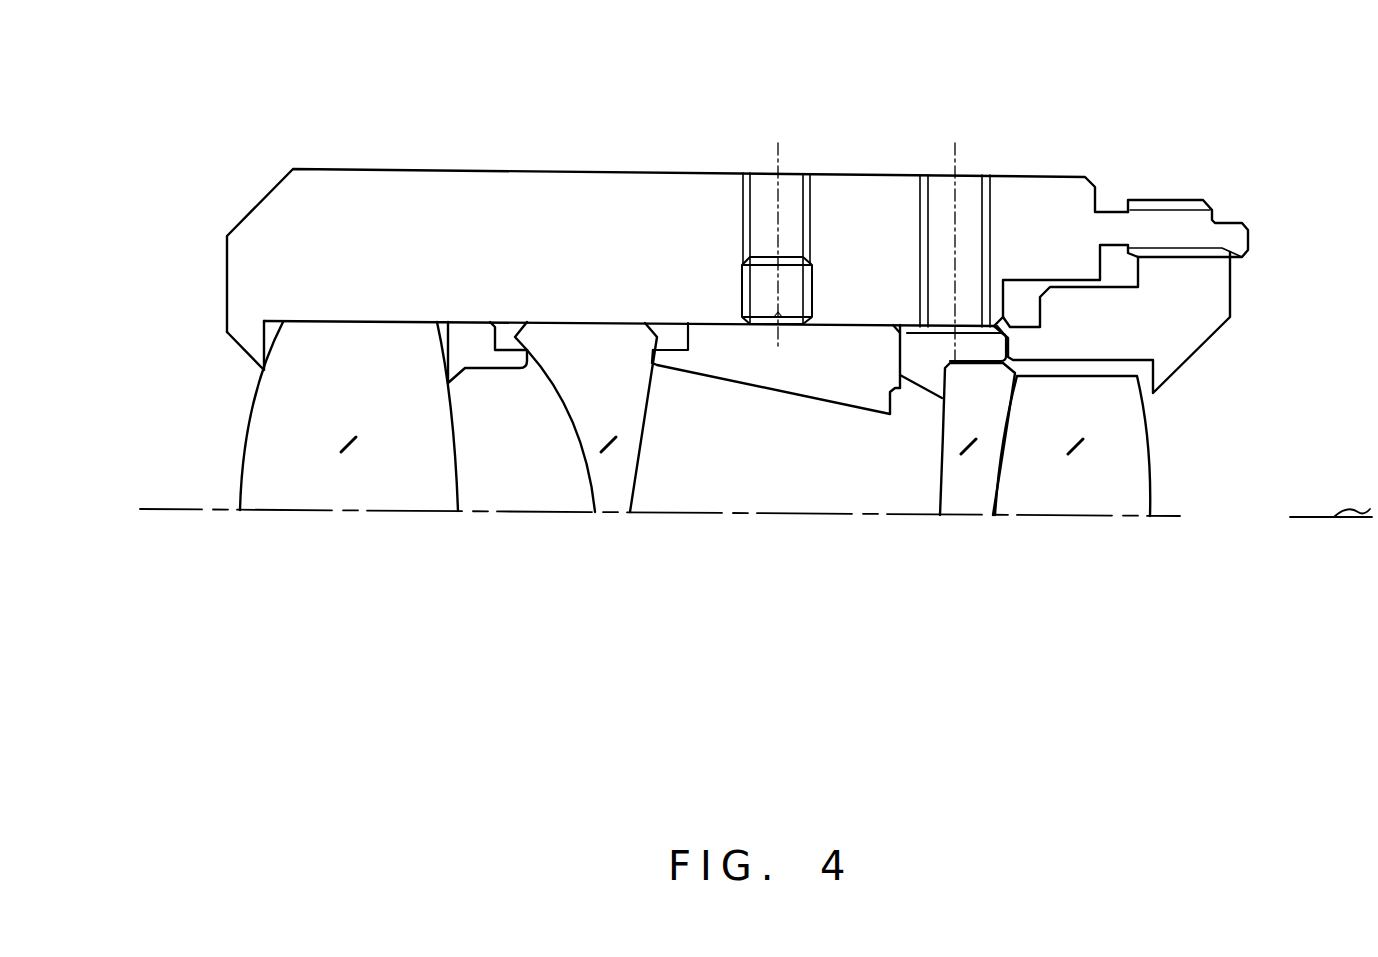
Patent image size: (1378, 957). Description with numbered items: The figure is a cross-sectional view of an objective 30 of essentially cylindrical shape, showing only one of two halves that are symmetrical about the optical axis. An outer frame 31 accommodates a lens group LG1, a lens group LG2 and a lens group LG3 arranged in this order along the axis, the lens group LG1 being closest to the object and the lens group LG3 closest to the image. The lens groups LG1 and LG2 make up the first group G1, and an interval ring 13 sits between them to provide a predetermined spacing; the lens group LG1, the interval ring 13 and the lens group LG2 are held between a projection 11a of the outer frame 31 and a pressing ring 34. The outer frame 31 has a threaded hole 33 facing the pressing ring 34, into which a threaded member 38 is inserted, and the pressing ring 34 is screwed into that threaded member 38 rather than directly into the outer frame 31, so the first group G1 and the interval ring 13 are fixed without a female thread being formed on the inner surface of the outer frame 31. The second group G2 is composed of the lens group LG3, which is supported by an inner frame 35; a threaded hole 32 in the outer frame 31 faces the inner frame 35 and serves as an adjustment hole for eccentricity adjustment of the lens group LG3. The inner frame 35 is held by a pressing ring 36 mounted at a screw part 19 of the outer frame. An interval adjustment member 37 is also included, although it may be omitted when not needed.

The objective 30 is at (1366, 89).
The outer frame 31 is at (267, 220).
The projection 11a is at (248, 338).
The interval ring 13 is at (480, 357).
The screw part 19 is at (1232, 254).
The threaded hole 32 is at (940, 188).
The threaded hole 33 is at (795, 188).
The pressing ring 34 is at (782, 372).
The inner frame 35 is at (932, 372).
The pressing ring 36 is at (1180, 337).
The interval adjustment member 37 is at (898, 417).
The threaded member 38 is at (763, 293).
The lens group LG1 is at (408, 498).
The lens group LG2 is at (610, 498).
The lens group LG3 is at (1037, 503).
The first group G1 is at (623, 593).
The second group G2 is at (1073, 597).